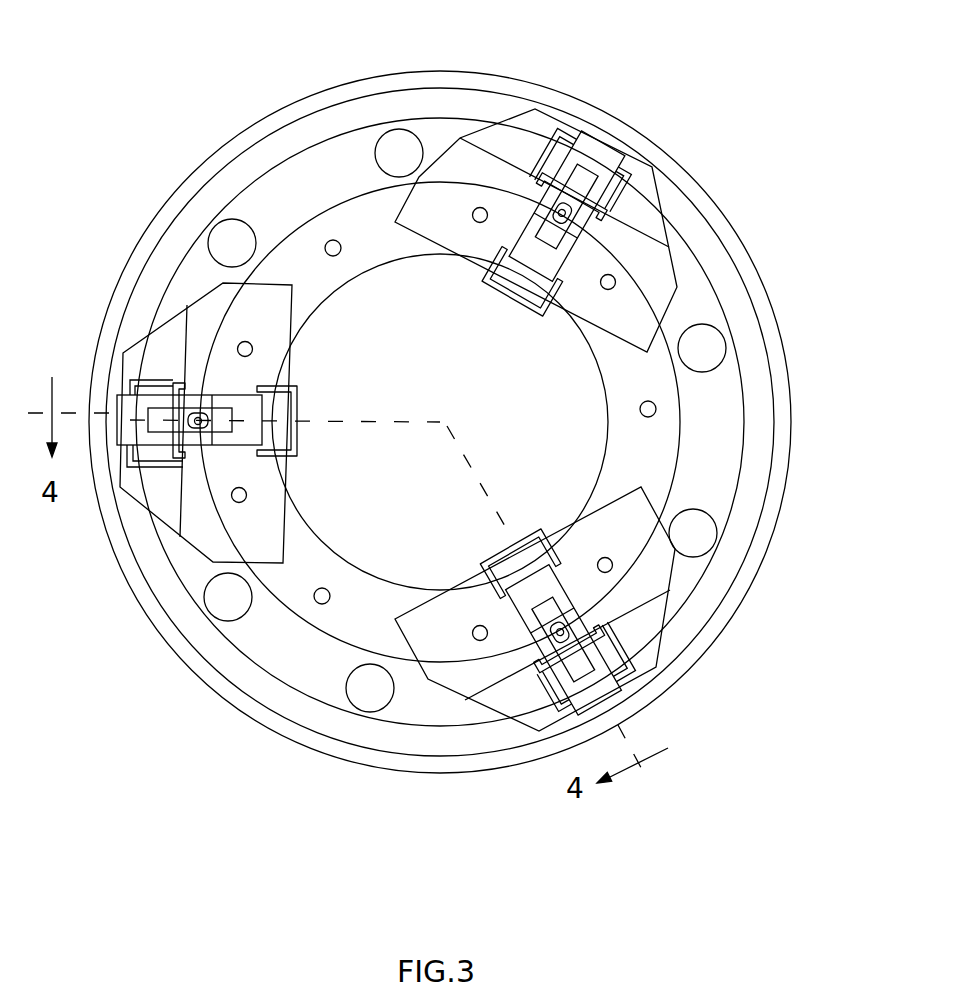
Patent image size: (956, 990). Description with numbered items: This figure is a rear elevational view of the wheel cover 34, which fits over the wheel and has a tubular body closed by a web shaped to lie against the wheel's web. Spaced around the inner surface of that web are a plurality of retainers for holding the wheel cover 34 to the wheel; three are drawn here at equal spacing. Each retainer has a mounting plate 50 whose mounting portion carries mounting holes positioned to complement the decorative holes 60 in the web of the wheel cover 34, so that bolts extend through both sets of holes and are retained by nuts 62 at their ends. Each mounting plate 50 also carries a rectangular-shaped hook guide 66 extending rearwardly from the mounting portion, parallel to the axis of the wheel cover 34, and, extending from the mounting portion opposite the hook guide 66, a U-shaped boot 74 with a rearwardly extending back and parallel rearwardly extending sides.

The wheel cover 34 is at (255, 112).
The mounting plate 50 is at (447, 140).
The decorative holes 60 is at (656, 409).
The nuts 62 is at (613, 564).
The hook guide 66 is at (183, 382).
The U-shaped boot 74 is at (263, 387).